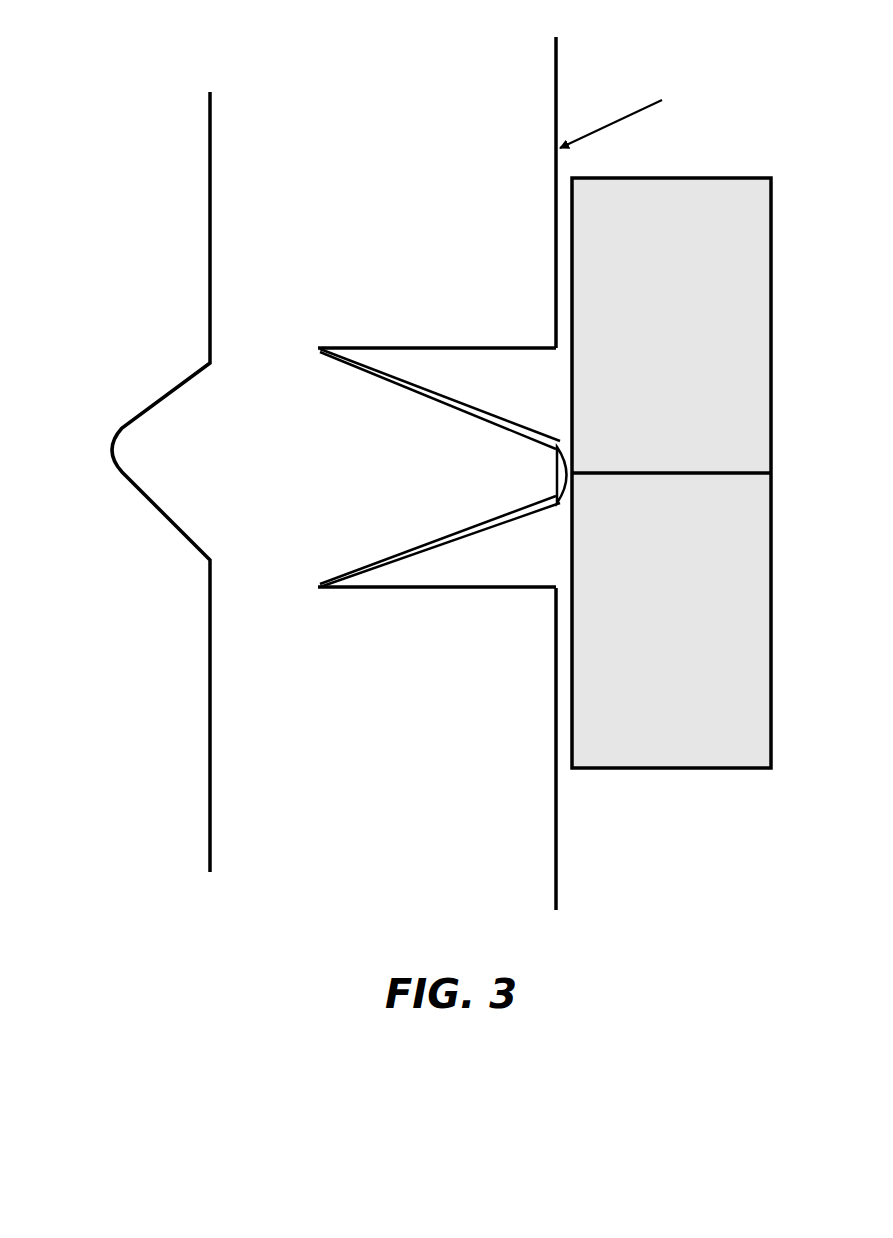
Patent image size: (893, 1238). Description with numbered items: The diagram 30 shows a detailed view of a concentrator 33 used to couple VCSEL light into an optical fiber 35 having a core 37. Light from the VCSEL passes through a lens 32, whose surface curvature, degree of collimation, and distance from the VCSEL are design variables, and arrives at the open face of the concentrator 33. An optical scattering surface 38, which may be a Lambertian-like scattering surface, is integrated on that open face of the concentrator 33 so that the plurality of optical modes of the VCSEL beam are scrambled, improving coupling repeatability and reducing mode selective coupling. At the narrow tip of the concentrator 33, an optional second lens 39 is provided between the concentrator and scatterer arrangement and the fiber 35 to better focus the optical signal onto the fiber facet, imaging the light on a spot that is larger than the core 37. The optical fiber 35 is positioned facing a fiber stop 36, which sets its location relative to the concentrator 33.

The diagram 30 is at (104, 146).
The lens 32 is at (180, 378).
The concentrator 33 is at (368, 560).
The optical fiber 35 is at (671, 473).
The fiber stop 36 is at (557, 80).
The core 37 is at (672, 476).
The optical scattering surface 38 is at (455, 395).
The second lens 39 is at (565, 440).